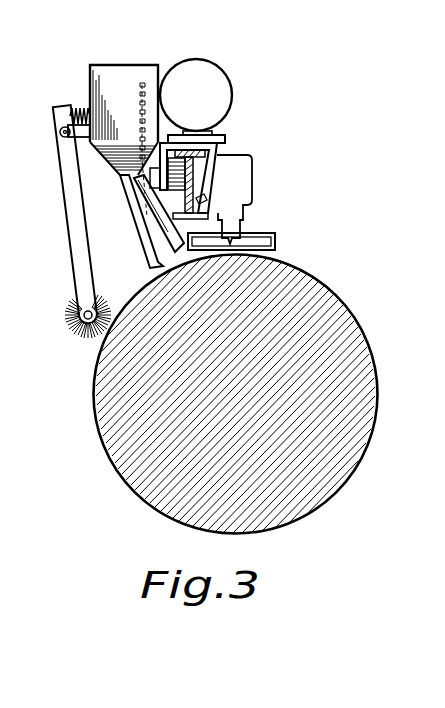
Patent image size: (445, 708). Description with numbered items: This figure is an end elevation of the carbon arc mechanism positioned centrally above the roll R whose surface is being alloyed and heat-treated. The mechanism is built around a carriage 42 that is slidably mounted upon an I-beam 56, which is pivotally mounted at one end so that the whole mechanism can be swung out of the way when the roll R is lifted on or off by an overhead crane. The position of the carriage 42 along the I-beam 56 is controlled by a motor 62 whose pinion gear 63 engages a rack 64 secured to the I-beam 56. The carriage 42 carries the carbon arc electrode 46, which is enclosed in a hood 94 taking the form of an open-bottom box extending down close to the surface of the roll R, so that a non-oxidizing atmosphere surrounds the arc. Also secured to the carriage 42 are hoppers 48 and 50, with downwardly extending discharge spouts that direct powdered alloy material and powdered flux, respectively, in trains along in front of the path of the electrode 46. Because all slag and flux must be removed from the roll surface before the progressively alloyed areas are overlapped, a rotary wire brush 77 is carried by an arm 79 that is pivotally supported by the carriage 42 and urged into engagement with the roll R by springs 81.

The roll R is at (338, 308).
The arm 79 is at (73, 223).
The rotary wire brush 77 is at (67, 313).
The springs 81 is at (83, 107).
The rack 64 is at (118, 170).
The pinion gear 63 is at (187, 181).
The hopper 48 is at (153, 237).
The hopper 50 is at (145, 257).
The motor 62 is at (220, 80).
The carriage 42 is at (222, 145).
The I-beam 56 is at (165, 169).
The hood 94 is at (267, 233).
The carbon arc electrode 46 is at (273, 242).